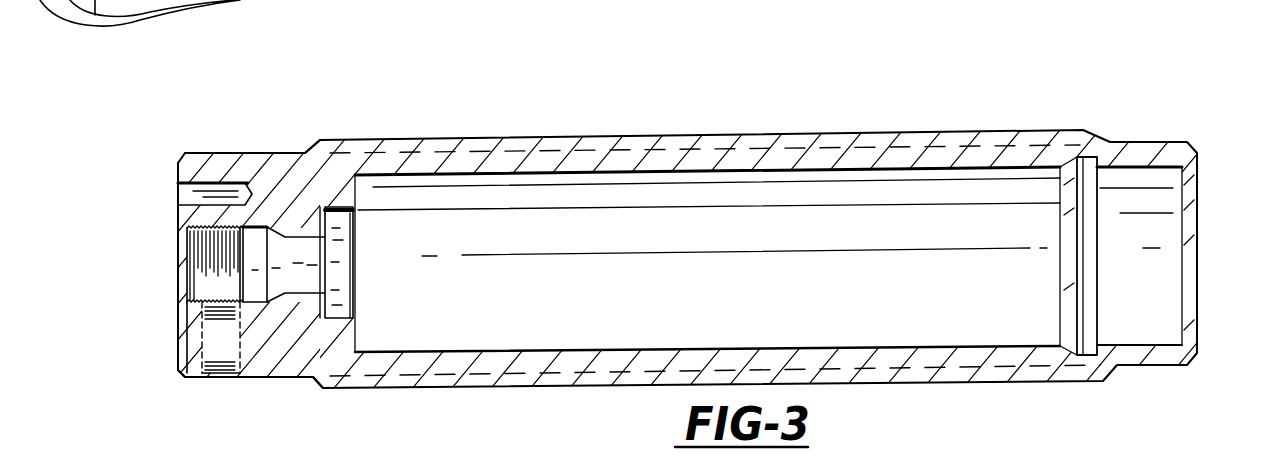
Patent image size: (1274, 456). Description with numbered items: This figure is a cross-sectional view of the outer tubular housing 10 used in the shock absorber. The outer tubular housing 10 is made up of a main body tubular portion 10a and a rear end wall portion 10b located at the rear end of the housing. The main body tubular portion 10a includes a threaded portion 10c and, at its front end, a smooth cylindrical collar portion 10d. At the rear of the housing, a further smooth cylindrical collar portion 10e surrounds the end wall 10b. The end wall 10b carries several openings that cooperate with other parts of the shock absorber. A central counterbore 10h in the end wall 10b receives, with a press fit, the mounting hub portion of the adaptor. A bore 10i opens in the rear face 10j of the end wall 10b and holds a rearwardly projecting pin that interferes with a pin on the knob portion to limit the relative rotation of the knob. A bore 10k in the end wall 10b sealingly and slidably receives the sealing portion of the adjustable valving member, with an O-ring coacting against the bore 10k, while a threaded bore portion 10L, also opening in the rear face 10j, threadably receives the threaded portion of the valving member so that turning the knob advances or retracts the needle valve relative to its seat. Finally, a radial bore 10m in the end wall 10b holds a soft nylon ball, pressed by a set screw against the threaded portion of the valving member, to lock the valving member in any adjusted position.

The outer tubular housing 10 is at (787, 118).
The main body tubular portion 10a is at (1028, 130).
The rear end wall portion 10b is at (285, 333).
The threaded portion 10c is at (588, 137).
The front end smooth cylindrical collar portion 10d is at (1137, 141).
The rear smooth cylindrical collar portion 10e is at (263, 152).
The central counterbore 10h is at (353, 222).
The bore 10i is at (185, 203).
The rear face 10j is at (178, 172).
The bore 10k is at (323, 289).
The threaded bore portion 10L is at (190, 300).
The radial bore 10m is at (200, 357).